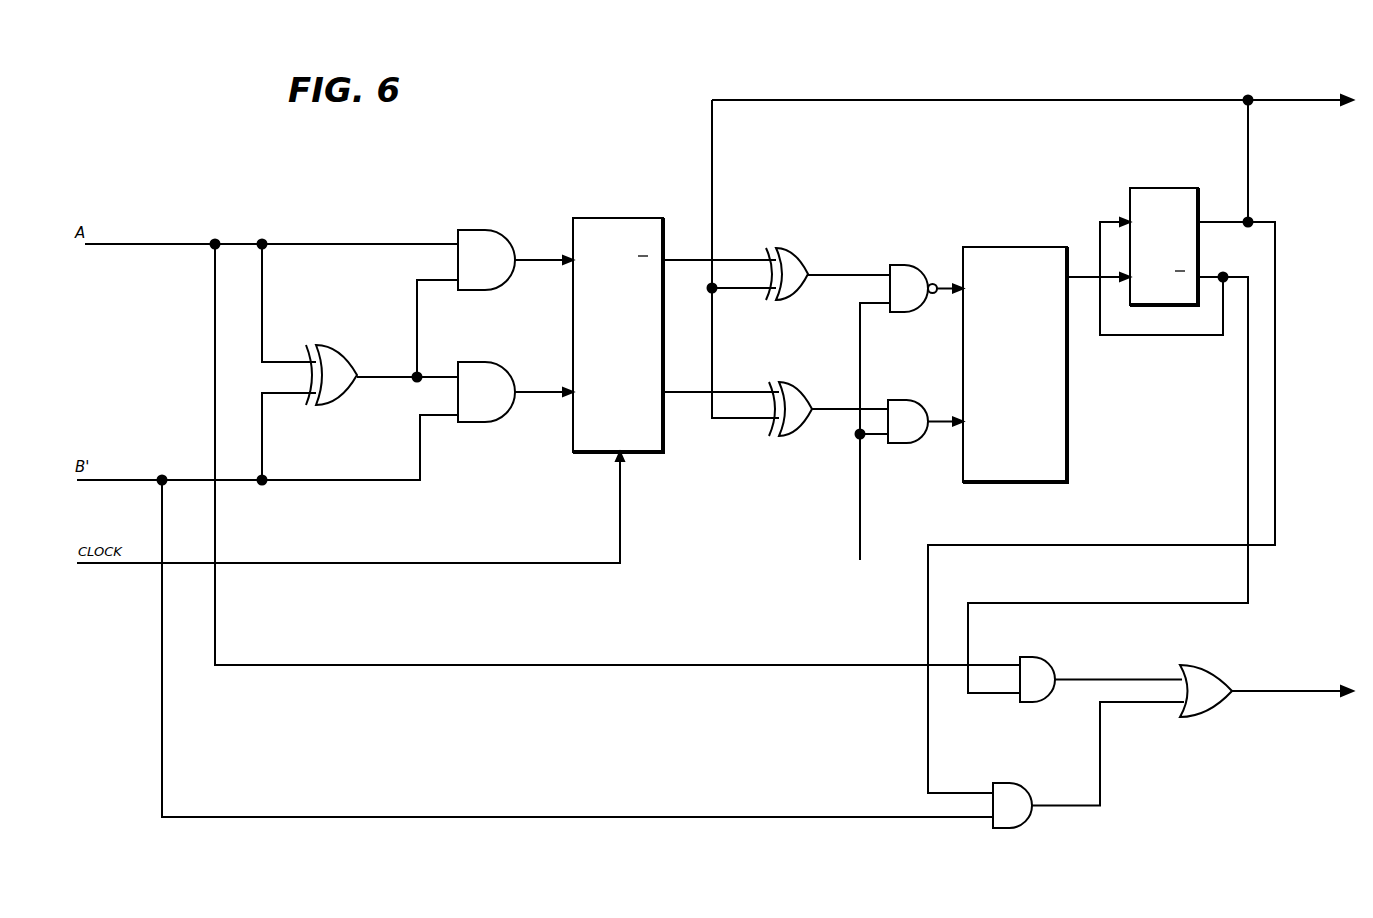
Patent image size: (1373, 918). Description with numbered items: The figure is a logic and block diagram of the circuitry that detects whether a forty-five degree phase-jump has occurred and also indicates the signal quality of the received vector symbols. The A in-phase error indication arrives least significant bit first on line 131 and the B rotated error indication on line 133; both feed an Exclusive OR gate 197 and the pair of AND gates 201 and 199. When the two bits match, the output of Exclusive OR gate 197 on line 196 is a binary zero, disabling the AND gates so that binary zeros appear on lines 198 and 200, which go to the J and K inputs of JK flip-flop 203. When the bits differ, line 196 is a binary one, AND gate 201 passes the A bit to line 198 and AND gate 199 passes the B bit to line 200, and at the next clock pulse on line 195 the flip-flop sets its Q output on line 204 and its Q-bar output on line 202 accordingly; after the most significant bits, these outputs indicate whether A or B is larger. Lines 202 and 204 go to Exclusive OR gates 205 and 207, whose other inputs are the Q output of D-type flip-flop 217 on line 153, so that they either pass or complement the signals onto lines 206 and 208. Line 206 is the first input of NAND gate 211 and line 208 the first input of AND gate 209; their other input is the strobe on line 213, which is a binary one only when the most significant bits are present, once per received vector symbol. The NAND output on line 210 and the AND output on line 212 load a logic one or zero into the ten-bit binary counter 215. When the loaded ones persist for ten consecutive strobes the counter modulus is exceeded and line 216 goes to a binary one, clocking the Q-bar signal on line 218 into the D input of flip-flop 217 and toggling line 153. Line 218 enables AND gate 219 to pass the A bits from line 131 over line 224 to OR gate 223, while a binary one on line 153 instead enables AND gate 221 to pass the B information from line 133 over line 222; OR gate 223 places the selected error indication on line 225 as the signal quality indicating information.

The line 131 is at (132, 245).
The line 133 is at (112, 482).
The clock line 195 is at (110, 565).
The output line of Exclusive OR gate 196 is at (382, 378).
The Exclusive OR gate 197 is at (345, 345).
The line 198 is at (537, 257).
The AND gate 199 is at (498, 425).
The line 200 is at (540, 390).
The AND gate 201 is at (490, 230).
The Q-bar output line 202 is at (727, 258).
The JK flip-flop 203 is at (612, 217).
The Q output line 204 is at (695, 394).
The Exclusive OR gate 205 is at (790, 250).
The line 206 is at (838, 276).
The Exclusive OR gate 207 is at (803, 428).
The line 208 is at (830, 400).
The AND gate 209 is at (913, 445).
The line 210 is at (947, 283).
The NAND gate 211 is at (896, 265).
The line 212 is at (937, 418).
The strobe line 213 is at (860, 541).
The 10-bit binary counter 215 is at (1062, 484).
The line 216 is at (1082, 275).
The D-type flip-flop 217 is at (1170, 187).
The Q-bar output line 218 is at (1198, 336).
The AND gate 219 is at (1050, 657).
The AND gate 221 is at (1027, 824).
The line 222 is at (1155, 704).
The OR gate 223 is at (1232, 663).
The line 224 is at (1107, 678).
The line 225 is at (1287, 697).
The Q output line 153 is at (750, 100).